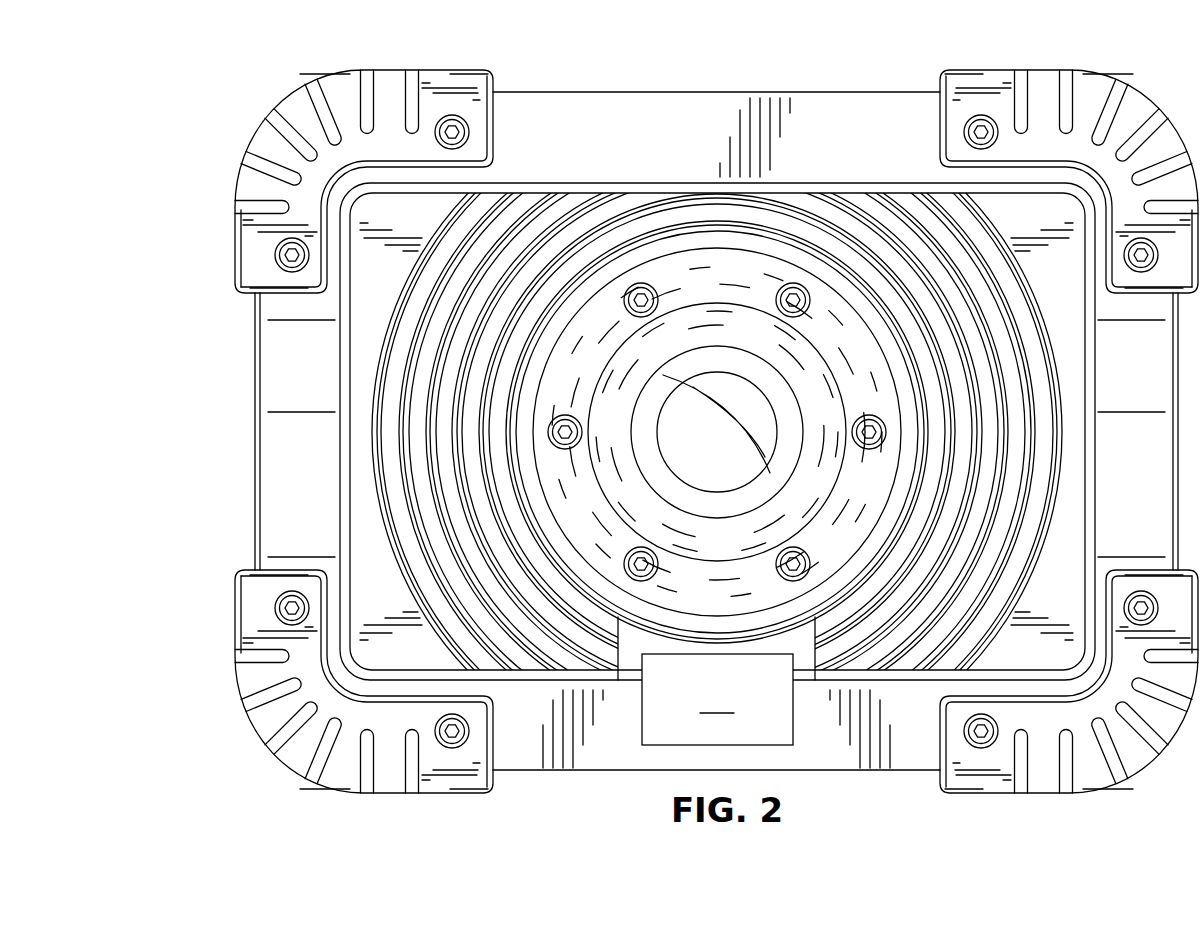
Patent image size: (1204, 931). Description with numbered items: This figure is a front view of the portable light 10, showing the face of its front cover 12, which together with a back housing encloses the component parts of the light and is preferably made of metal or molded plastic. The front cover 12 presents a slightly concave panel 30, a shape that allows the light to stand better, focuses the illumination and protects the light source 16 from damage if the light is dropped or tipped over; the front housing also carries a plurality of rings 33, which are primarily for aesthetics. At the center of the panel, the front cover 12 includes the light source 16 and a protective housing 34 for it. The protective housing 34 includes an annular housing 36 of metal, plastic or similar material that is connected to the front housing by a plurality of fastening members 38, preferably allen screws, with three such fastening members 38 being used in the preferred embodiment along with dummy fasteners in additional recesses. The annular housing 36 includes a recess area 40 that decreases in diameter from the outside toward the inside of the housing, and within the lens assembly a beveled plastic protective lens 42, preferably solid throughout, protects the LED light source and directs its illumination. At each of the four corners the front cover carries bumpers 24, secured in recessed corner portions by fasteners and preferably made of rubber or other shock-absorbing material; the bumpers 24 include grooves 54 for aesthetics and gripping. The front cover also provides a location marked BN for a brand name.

The portable light 10 is at (235, 398).
The front cover 12 is at (235, 486).
The light source 16 is at (712, 350).
The bumpers 24 is at (302, 112).
The slightly concave panel 30 is at (285, 483).
The rings 33 is at (523, 607).
The protective housing 34 is at (647, 610).
The annular housing 36 is at (826, 320).
The fastening members 38 is at (636, 298).
The recess area 40 is at (613, 500).
The beveled plastic protective lens 42 is at (691, 446).
The grooves 54 is at (1112, 100).